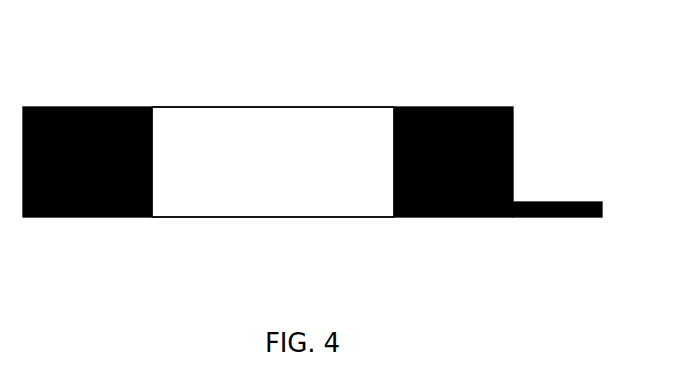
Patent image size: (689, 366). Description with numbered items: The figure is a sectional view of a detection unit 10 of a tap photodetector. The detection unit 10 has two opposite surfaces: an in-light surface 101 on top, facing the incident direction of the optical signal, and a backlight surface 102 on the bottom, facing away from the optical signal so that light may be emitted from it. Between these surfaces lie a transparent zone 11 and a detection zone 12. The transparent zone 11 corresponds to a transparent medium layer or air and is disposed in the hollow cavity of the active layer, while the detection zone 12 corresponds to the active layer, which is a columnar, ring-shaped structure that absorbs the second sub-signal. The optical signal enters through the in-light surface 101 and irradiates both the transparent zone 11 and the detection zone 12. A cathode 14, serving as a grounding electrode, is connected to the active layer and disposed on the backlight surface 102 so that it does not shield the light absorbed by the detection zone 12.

The detection unit 10 is at (33, 40).
The transparent zone 11 is at (257, 115).
The in-light surface 101 is at (177, 107).
The backlight surface 102 is at (183, 217).
The detection zone 12 is at (455, 107).
The cathode 14 is at (590, 200).